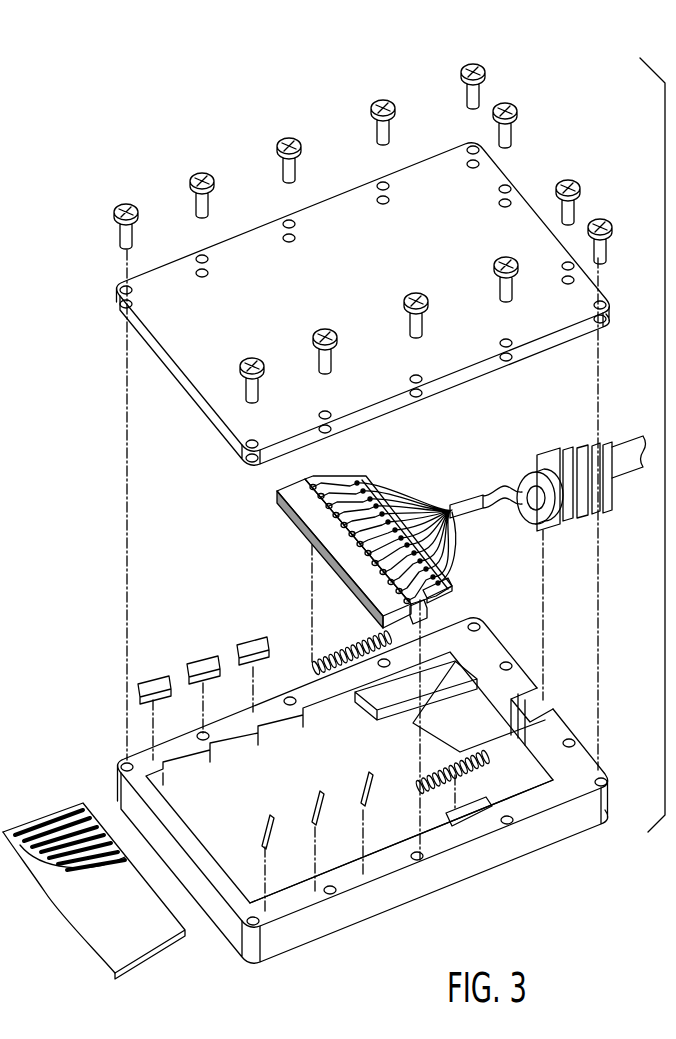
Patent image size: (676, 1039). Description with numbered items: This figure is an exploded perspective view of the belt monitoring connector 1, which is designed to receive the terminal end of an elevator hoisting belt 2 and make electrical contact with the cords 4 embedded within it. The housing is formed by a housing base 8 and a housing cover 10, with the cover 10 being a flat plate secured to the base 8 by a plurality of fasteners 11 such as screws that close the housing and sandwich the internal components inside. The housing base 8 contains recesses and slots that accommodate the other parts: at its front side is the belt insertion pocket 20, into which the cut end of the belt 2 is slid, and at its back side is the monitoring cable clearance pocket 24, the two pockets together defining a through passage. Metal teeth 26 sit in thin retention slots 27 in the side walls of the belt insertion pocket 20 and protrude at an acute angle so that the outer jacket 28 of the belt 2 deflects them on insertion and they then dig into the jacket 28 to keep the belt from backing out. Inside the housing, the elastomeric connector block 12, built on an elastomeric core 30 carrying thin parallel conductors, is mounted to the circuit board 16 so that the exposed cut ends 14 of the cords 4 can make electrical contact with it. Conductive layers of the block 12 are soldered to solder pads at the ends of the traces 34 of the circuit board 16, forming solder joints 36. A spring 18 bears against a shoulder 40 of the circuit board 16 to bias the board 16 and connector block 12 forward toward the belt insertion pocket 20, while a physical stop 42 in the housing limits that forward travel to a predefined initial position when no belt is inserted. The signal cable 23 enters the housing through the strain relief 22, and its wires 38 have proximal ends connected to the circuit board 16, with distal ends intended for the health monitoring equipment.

The belt monitoring connector 1 is at (110, 80).
The hoisting belt 2 is at (67, 949).
The cords 4 is at (60, 820).
The housing base 8 is at (378, 895).
The housing cover 10 is at (153, 313).
The fasteners 11 is at (121, 208).
The elastomeric connector block 12 is at (280, 493).
The exposed cut ends 14 is at (96, 818).
The circuit board 16 is at (357, 483).
The spring 18 is at (427, 792).
The belt insertion pocket 20 is at (207, 792).
The strain relief 22 is at (589, 445).
The signal cable 23 is at (627, 470).
The monitoring cable clearance pocket 24 is at (503, 748).
The teeth 26 is at (203, 662).
The retention slots 27 is at (316, 880).
The outer jacket 28 is at (143, 943).
The core 30 is at (393, 622).
The traces 34 is at (446, 583).
The solder joints 36 is at (440, 595).
The wires 38 is at (457, 563).
The shoulders 40 is at (425, 615).
The physical stops 42 is at (425, 838).